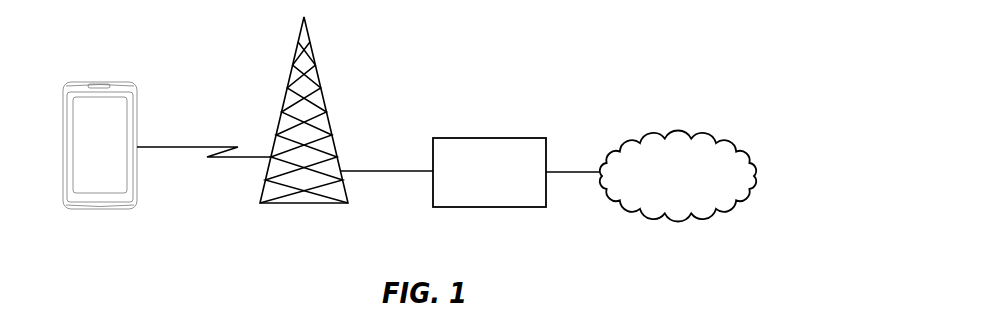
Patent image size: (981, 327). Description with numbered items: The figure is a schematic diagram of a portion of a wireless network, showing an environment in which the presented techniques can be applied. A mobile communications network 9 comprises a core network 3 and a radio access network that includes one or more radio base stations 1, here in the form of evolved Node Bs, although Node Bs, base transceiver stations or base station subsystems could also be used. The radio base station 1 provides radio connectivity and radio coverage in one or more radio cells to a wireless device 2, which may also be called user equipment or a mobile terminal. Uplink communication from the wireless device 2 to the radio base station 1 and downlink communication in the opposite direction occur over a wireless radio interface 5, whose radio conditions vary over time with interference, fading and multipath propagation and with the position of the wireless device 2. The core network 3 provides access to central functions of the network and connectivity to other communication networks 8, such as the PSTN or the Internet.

The radio base station 1 is at (323, 97).
The wireless device 2 is at (112, 82).
The core network 3 is at (482, 193).
The wireless radio interface 5 is at (187, 147).
The other communication network 8 is at (672, 184).
The mobile communications network 9 is at (732, 82).